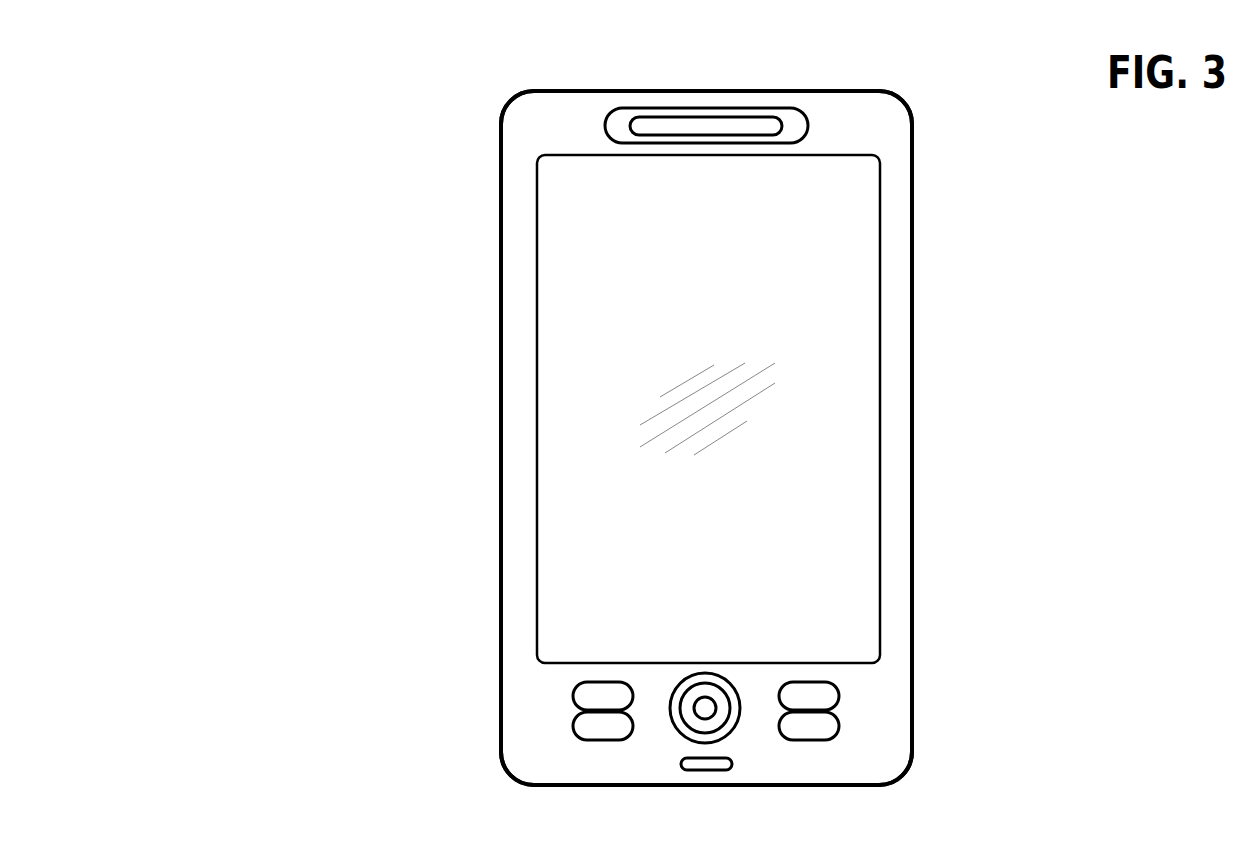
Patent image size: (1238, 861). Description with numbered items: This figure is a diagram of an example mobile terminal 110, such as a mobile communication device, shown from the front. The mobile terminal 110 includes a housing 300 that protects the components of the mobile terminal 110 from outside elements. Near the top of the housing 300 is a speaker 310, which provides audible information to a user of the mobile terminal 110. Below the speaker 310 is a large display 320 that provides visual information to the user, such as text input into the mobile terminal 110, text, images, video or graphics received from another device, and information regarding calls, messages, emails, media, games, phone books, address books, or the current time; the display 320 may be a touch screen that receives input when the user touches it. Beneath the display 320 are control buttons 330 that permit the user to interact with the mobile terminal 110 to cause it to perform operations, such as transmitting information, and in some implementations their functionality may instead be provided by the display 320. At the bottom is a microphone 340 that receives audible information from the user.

The mobile terminal 110 is at (207, 29).
The housing 300 is at (501, 226).
The speaker 310 is at (605, 121).
The display 320 is at (560, 279).
The control buttons 330 is at (545, 727).
The microphone 340 is at (705, 769).